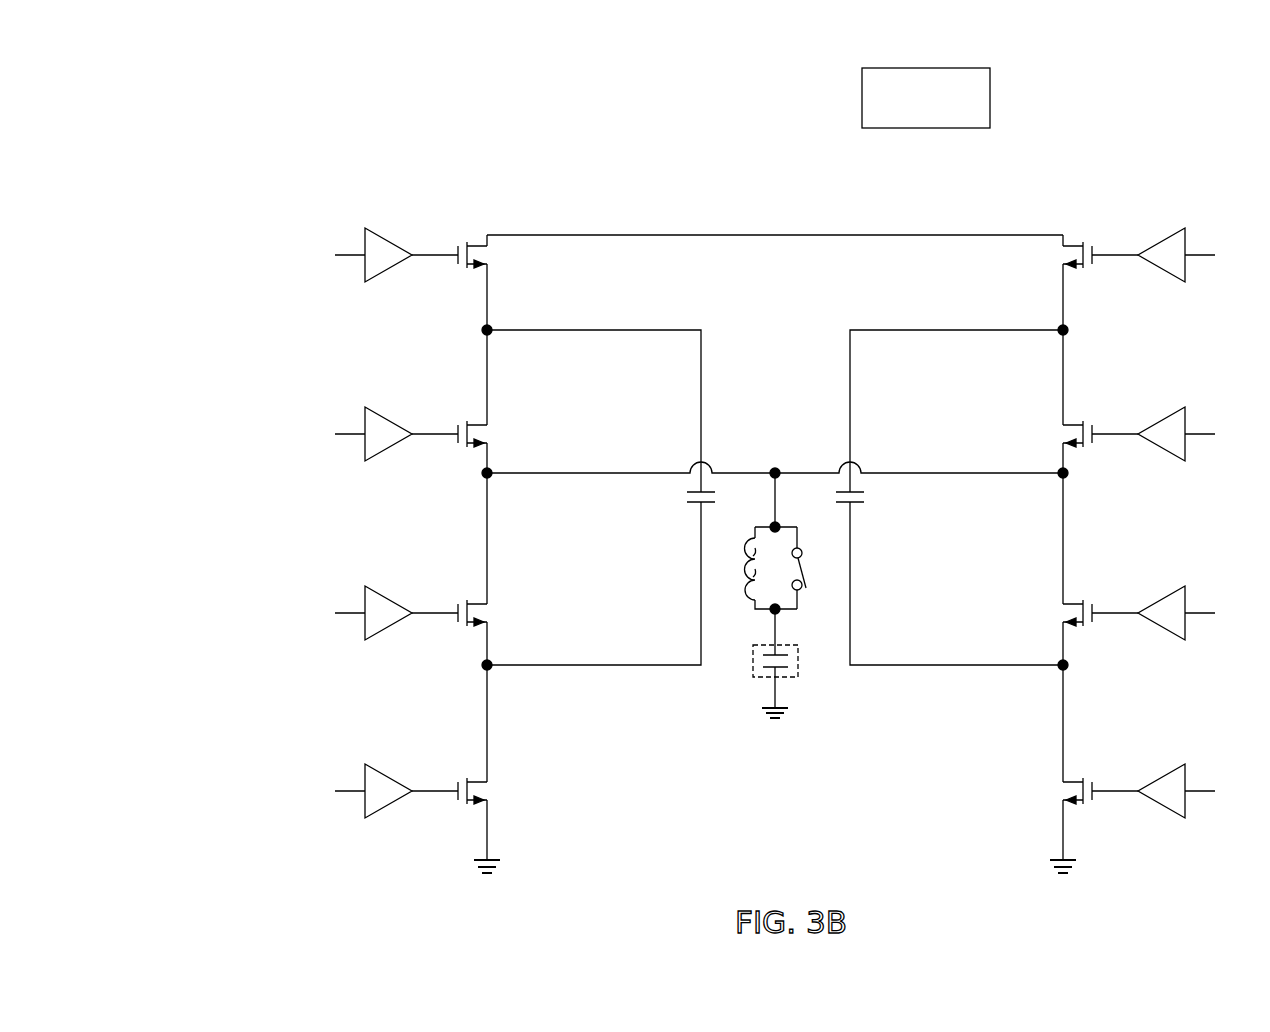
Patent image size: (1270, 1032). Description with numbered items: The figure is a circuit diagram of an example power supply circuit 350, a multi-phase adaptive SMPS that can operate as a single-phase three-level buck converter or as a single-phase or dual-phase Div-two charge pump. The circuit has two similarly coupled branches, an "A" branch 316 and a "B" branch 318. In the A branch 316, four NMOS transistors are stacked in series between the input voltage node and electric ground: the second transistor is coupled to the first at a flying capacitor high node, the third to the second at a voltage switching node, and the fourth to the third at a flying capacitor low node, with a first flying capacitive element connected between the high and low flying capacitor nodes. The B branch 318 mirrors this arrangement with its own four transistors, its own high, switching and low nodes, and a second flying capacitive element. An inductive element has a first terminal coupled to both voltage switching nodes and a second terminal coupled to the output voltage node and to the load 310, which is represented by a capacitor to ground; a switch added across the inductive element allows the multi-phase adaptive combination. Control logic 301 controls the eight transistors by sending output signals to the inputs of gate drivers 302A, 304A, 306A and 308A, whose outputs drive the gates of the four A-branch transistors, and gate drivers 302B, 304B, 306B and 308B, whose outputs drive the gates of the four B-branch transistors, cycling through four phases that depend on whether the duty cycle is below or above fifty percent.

The power supply circuit 350 is at (191, 42).
The control logic 301 is at (990, 108).
The gate driver 302A is at (396, 246).
The gate driver 304A is at (396, 425).
The gate driver 306A is at (396, 604).
The gate driver 308A is at (396, 782).
The gate driver 302B is at (1154, 246).
The gate driver 304B is at (1154, 425).
The gate driver 306B is at (1154, 604).
The gate driver 308B is at (1154, 782).
The load 310 is at (792, 679).
The "A" branch 316 is at (434, 870).
The "B" branch 318 is at (1097, 862).